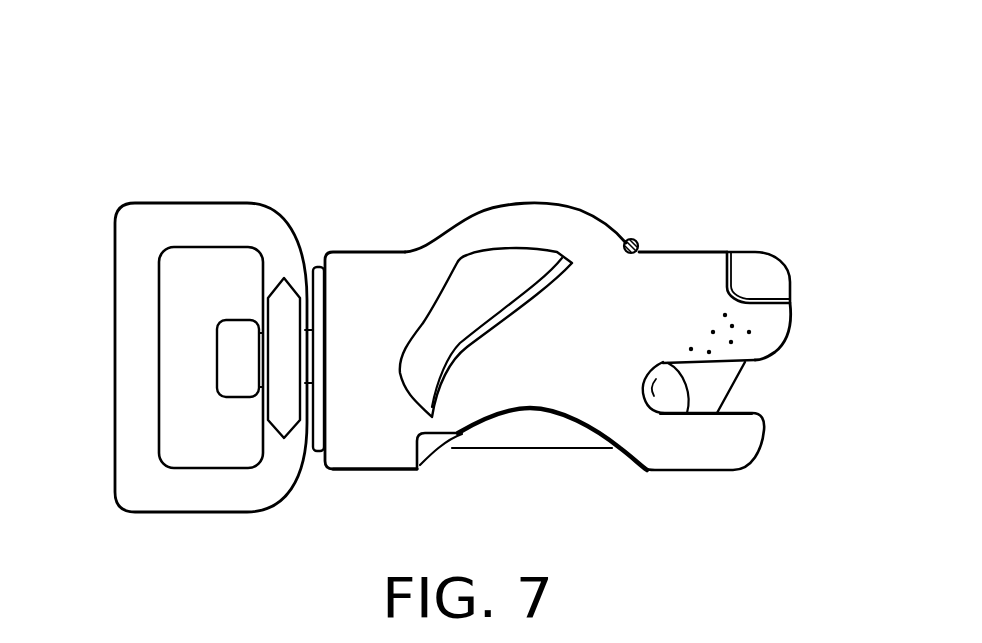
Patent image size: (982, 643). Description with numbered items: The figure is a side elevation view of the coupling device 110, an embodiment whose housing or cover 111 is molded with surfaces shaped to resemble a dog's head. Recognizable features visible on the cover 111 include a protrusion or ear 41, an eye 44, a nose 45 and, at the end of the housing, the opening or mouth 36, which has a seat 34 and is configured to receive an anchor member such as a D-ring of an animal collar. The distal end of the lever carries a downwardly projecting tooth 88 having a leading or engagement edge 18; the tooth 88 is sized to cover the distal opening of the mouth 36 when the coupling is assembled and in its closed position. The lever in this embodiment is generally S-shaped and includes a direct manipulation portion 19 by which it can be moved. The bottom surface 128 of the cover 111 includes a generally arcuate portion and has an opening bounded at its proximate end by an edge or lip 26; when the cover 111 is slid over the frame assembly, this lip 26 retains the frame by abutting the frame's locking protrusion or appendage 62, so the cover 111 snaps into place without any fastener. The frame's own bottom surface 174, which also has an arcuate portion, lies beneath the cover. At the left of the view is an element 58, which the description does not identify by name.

The coupling device 110 is at (195, 134).
The strap adjuster loop 58 is at (126, 299).
The housing or cover 111 is at (569, 203).
The ear 41 is at (502, 272).
The eye 44 is at (637, 240).
The nose 45 is at (766, 275).
The mouth 36 is at (786, 377).
The seat 34 is at (654, 375).
The engagement edge 18 is at (740, 384).
The bottom surface 128 is at (562, 425).
The direct manipulation portion 19 is at (523, 441).
The bottom surface 174 is at (469, 447).
The locking protrusion 62 is at (427, 463).
The edge or lip 26 is at (420, 468).
The tooth 88 is at (700, 408).